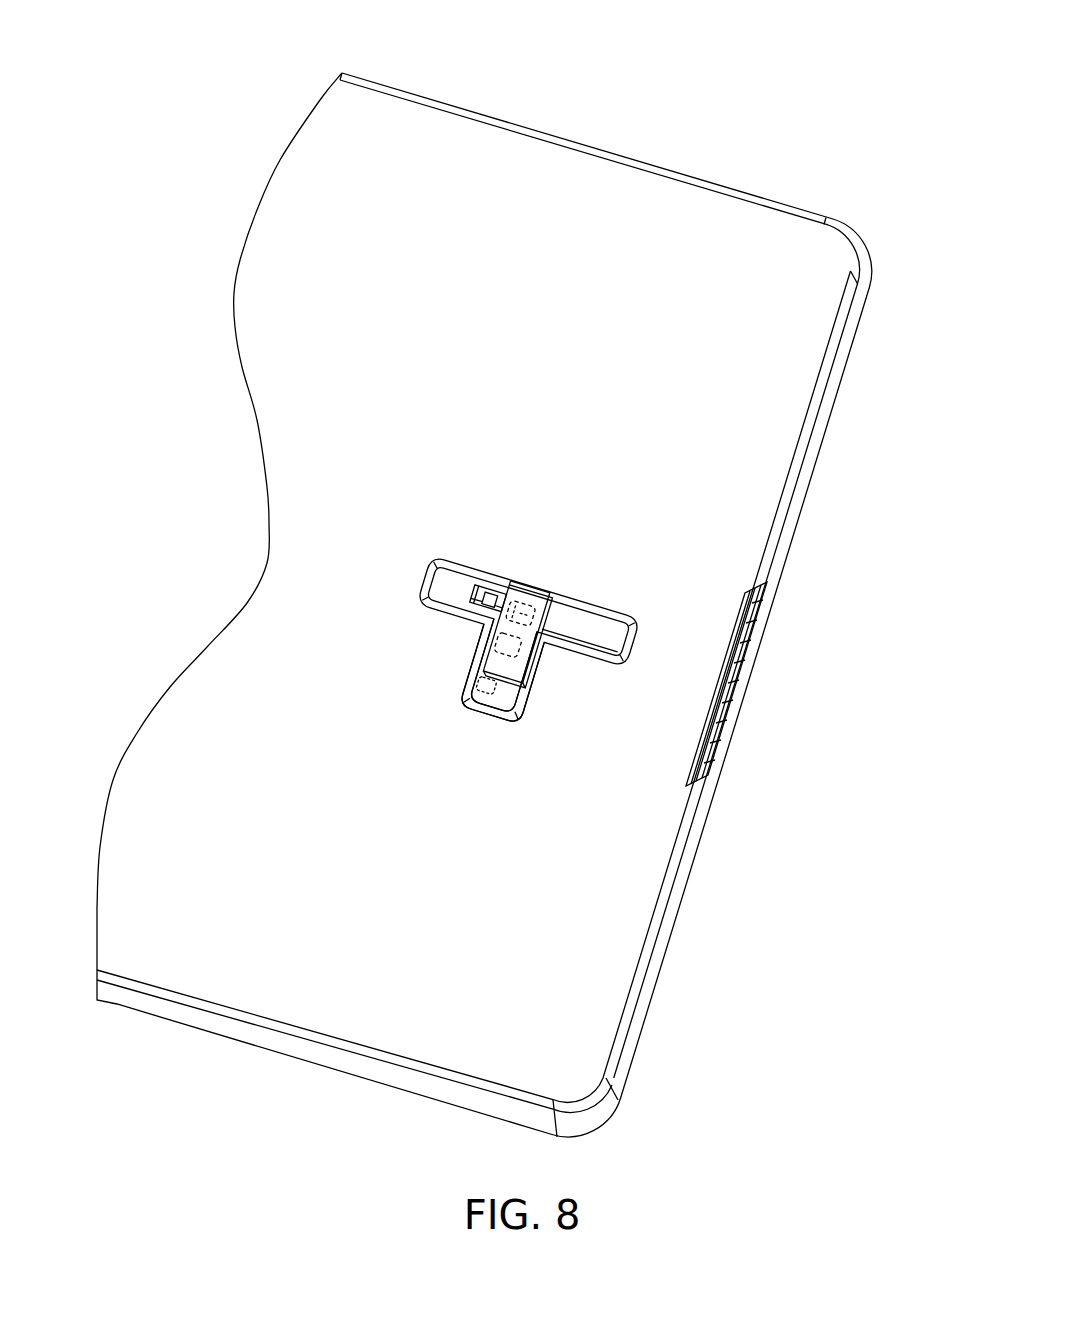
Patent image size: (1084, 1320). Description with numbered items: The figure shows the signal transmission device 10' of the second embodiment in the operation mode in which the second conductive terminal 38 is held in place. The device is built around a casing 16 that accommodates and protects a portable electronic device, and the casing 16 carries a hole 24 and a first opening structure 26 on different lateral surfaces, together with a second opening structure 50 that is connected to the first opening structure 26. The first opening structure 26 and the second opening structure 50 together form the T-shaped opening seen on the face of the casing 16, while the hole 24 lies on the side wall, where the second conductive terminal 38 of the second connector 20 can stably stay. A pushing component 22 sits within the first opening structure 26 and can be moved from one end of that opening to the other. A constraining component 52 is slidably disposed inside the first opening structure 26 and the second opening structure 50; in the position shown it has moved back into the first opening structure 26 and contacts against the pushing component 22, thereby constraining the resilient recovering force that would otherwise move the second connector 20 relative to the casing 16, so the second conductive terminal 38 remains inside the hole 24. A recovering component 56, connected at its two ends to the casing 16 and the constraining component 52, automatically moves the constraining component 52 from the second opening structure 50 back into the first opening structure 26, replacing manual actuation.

The signal transmission device 10' is at (708, 52).
The casing 16 is at (697, 200).
The second connector 20 is at (568, 628).
The pushing component 22 is at (490, 598).
The hole 24 is at (707, 775).
The first opening structure 26 is at (455, 578).
The second conductive terminal 38 is at (745, 655).
The second opening structure 50 is at (479, 703).
The constraining component 52 is at (522, 612).
The recovering component 56 is at (472, 688).